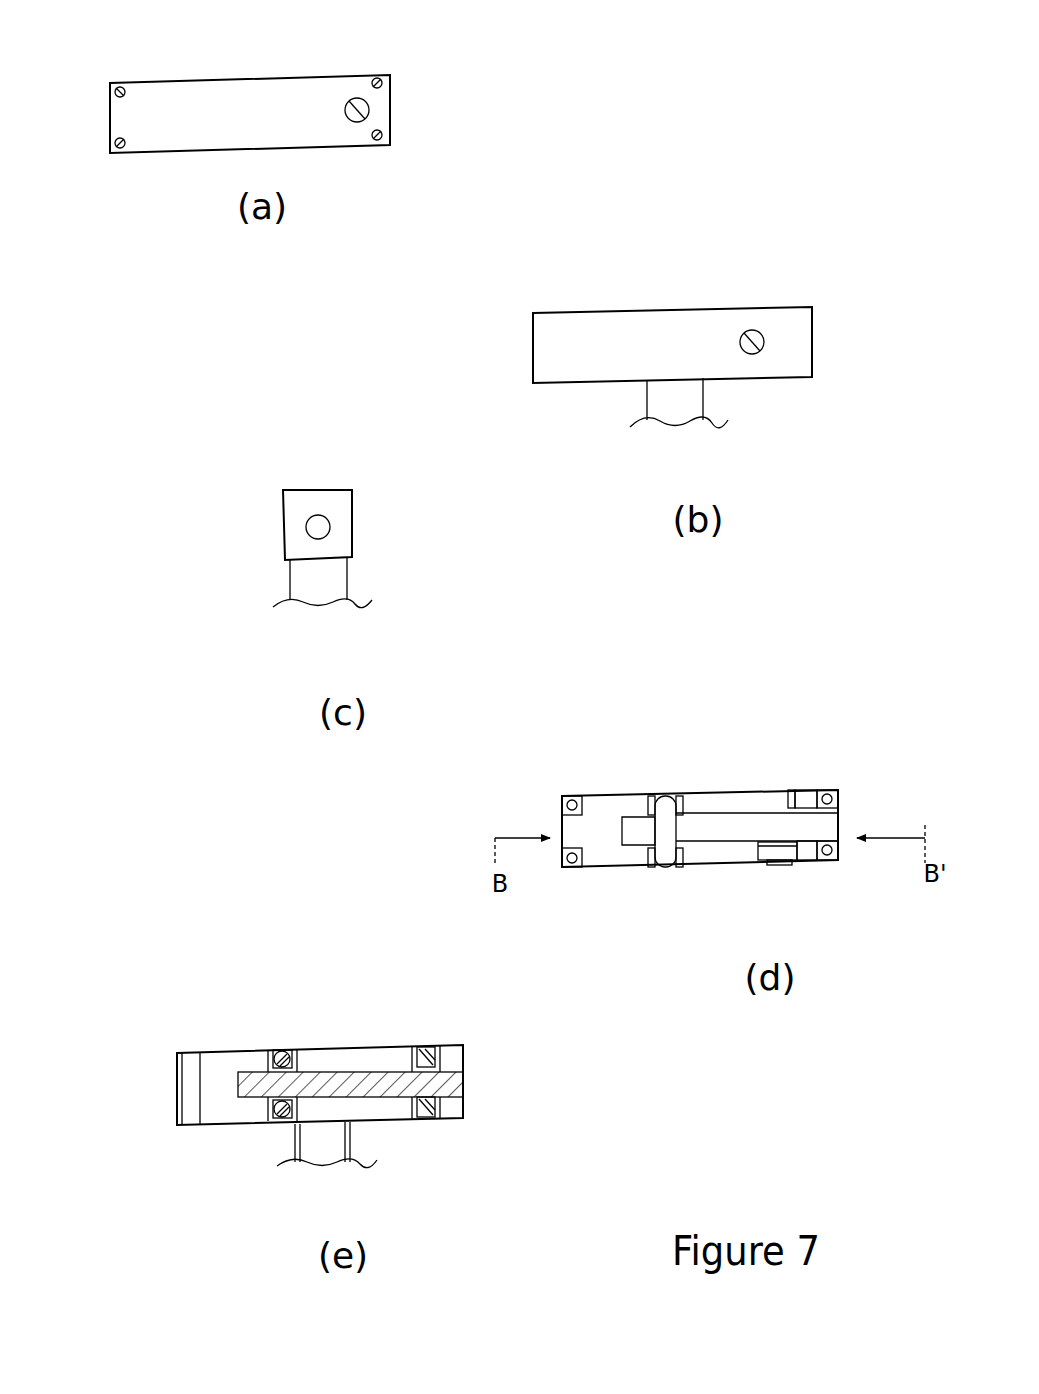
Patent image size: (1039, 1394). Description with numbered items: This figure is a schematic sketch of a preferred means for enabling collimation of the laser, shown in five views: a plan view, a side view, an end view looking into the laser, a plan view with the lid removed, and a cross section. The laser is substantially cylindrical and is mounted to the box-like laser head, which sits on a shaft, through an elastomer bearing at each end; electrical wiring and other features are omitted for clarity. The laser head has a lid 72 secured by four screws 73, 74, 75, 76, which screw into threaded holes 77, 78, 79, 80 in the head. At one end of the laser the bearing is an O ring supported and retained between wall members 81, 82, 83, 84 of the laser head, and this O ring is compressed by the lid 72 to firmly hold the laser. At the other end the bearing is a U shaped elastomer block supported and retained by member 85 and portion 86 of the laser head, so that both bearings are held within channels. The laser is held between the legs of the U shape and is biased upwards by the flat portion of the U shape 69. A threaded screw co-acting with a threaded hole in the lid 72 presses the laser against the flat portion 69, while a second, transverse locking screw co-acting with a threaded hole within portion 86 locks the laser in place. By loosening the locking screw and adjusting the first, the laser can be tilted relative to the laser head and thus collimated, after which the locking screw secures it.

The flat portion of the U shape 69 is at (440, 1120).
The lid 72 is at (240, 97).
The screw 73 is at (110, 153).
The screw 74 is at (110, 84).
The screw 75 is at (385, 75).
The screw 76 is at (380, 146).
The threaded hole 77 is at (568, 870).
The threaded hole 78 is at (565, 795).
The threaded hole 79 is at (830, 792).
The threaded hole 80 is at (832, 862).
The wall member 81 is at (680, 860).
The wall member 82 is at (650, 852).
The wall member 83 is at (640, 793).
The wall member 84 is at (688, 797).
The member 85 is at (790, 793).
The portion 86 is at (768, 853).